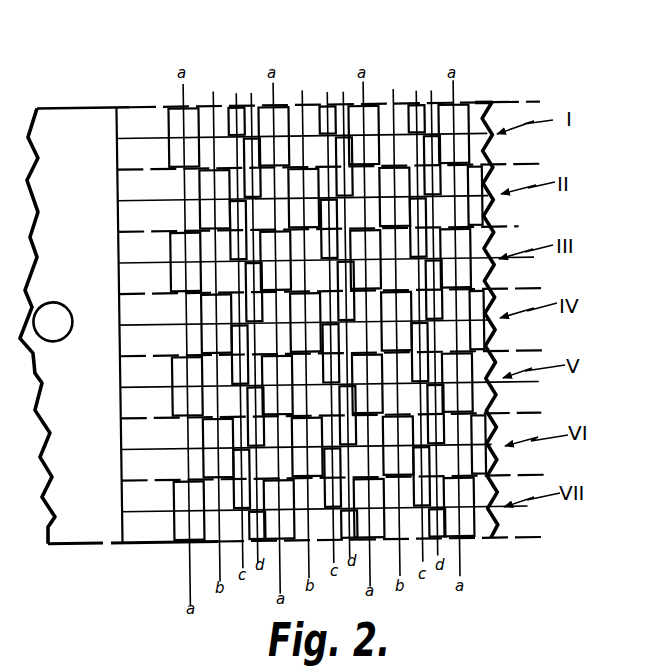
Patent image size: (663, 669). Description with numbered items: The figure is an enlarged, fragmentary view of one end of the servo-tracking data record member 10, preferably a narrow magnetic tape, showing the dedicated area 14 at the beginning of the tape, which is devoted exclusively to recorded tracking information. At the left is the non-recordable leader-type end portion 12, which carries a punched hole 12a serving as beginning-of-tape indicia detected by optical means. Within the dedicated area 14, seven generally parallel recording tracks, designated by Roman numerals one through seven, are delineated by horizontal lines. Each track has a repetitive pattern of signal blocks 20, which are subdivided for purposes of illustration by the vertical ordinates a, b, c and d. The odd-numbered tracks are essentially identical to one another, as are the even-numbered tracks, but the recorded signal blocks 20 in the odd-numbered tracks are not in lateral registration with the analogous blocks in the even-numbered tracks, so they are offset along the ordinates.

The servo-tracking data record member 10 is at (331, 326).
The leader-type end portion 12 is at (76, 300).
The punched hole 12a is at (57, 311).
The dedicated area 14 is at (328, 559).
The signal block 20 is at (317, 311).